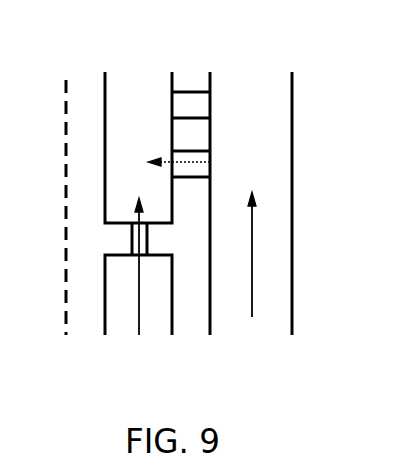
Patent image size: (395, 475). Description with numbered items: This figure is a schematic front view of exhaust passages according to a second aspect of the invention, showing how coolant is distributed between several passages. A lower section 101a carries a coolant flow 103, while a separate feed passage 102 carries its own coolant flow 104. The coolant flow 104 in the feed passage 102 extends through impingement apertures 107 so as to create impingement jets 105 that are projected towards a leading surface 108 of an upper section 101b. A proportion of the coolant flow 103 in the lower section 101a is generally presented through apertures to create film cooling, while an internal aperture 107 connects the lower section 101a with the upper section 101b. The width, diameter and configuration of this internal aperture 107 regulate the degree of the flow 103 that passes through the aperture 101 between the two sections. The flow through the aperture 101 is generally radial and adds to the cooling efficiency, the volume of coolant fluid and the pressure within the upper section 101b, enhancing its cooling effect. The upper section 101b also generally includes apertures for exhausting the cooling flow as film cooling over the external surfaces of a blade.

The leading surface 108 is at (105, 96).
The impingement jets 105 is at (190, 162).
The feed passage 102 is at (275, 138).
The impingement apertures 107 is at (192, 178).
The upper section 101b is at (165, 195).
The aperture 101 is at (147, 241).
The coolant flow 104 is at (252, 287).
The lower section 101a is at (120, 318).
The coolant flow 103 is at (140, 303).